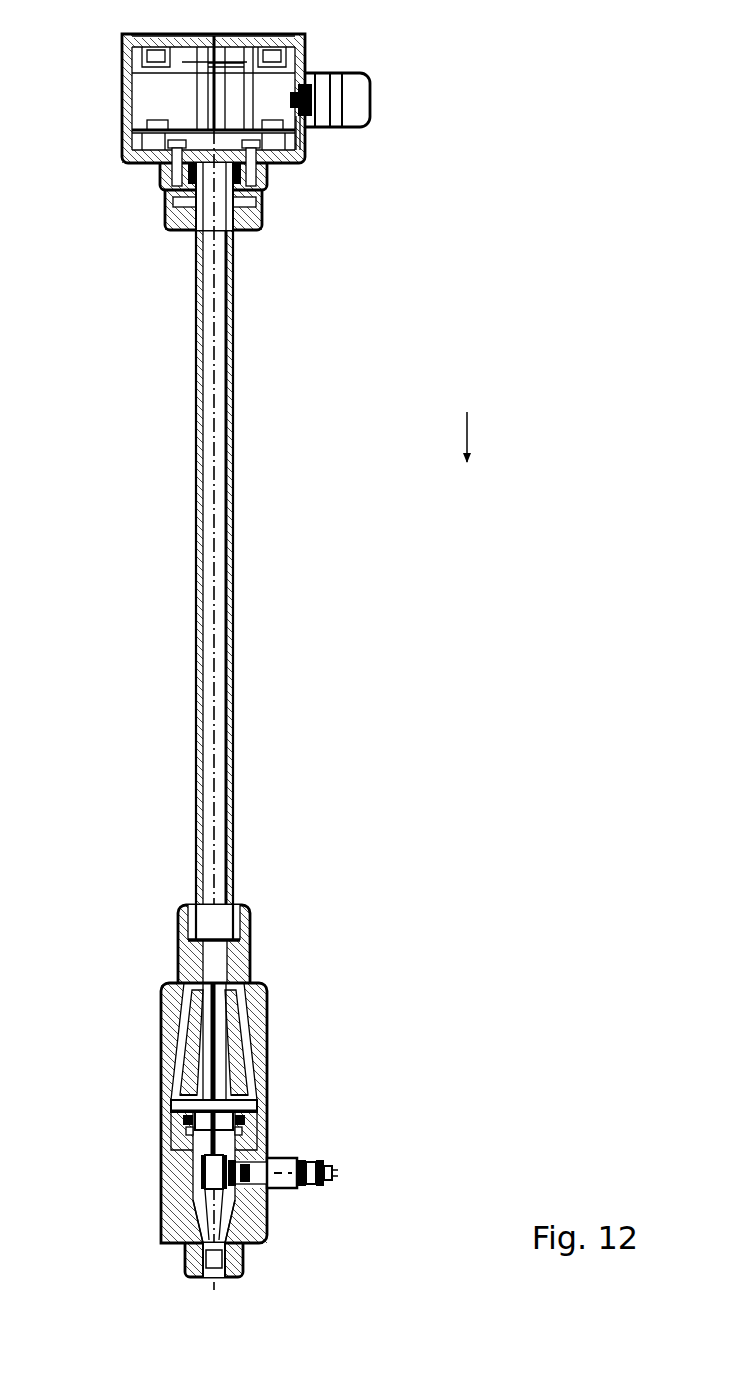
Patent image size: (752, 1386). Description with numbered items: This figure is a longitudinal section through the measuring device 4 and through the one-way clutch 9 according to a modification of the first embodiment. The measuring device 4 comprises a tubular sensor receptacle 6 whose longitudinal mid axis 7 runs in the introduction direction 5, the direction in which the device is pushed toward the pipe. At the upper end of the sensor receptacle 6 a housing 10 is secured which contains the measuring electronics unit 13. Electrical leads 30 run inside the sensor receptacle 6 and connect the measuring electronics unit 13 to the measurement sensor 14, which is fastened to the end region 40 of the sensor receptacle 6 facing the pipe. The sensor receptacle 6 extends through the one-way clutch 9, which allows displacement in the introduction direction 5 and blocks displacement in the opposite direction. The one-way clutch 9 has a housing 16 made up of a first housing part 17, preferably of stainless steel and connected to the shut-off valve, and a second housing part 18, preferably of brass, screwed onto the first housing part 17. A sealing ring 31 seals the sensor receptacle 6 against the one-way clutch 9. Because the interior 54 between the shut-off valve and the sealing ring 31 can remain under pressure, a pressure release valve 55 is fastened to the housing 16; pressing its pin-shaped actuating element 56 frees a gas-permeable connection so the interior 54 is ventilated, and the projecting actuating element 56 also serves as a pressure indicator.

The measuring device 4 is at (88, 47).
The housing 10 is at (122, 90).
The measuring electronics unit 13 is at (248, 58).
The introduction direction 5 is at (478, 433).
The longitudinal mid axis 7 is at (213, 510).
The sensor receptacle 6 is at (200, 673).
The one-way clutch 9 is at (152, 968).
The second housing part 18 is at (268, 1003).
The housing 16 is at (160, 1023).
The electrical leads 30 is at (217, 1041).
The sealing ring 31 is at (232, 1130).
The pressure release valve 55 is at (287, 1158).
The actuating element 56 is at (337, 1172).
The interior 54 is at (196, 1232).
The first housing part 17 is at (262, 1216).
The measurement sensor 14 is at (184, 1252).
The end region 40 is at (210, 1272).